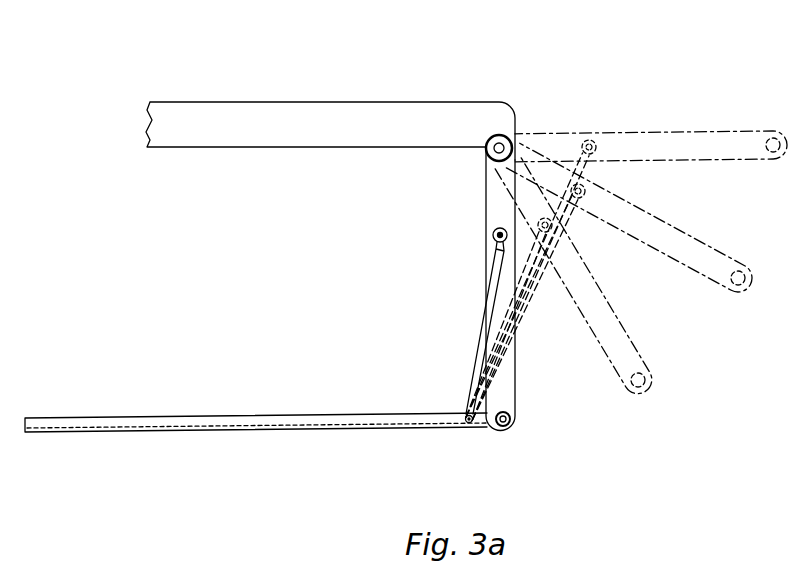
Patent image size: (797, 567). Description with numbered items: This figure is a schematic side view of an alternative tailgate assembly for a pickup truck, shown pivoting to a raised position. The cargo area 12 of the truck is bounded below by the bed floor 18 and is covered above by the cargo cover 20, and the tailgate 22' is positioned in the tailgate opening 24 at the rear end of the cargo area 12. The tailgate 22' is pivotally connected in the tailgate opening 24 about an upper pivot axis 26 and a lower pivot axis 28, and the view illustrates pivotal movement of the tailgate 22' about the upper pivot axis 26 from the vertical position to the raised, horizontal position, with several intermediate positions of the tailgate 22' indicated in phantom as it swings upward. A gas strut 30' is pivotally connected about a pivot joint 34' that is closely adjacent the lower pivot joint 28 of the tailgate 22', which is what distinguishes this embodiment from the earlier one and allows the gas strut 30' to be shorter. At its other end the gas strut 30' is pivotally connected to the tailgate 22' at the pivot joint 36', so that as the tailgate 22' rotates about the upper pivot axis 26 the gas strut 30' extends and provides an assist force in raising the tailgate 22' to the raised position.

The cargo area 12 is at (268, 268).
The bed floor 18 is at (183, 417).
The cargo cover 20 is at (392, 101).
The tailgate 22' is at (636, 252).
The tailgate opening 24 is at (419, 193).
The upper pivot axis 26 is at (500, 141).
The lower pivot axis 28 is at (503, 427).
The gas strut 30' is at (492, 287).
The pivot joint 34' is at (452, 456).
The pivot joint 36' is at (600, 152).